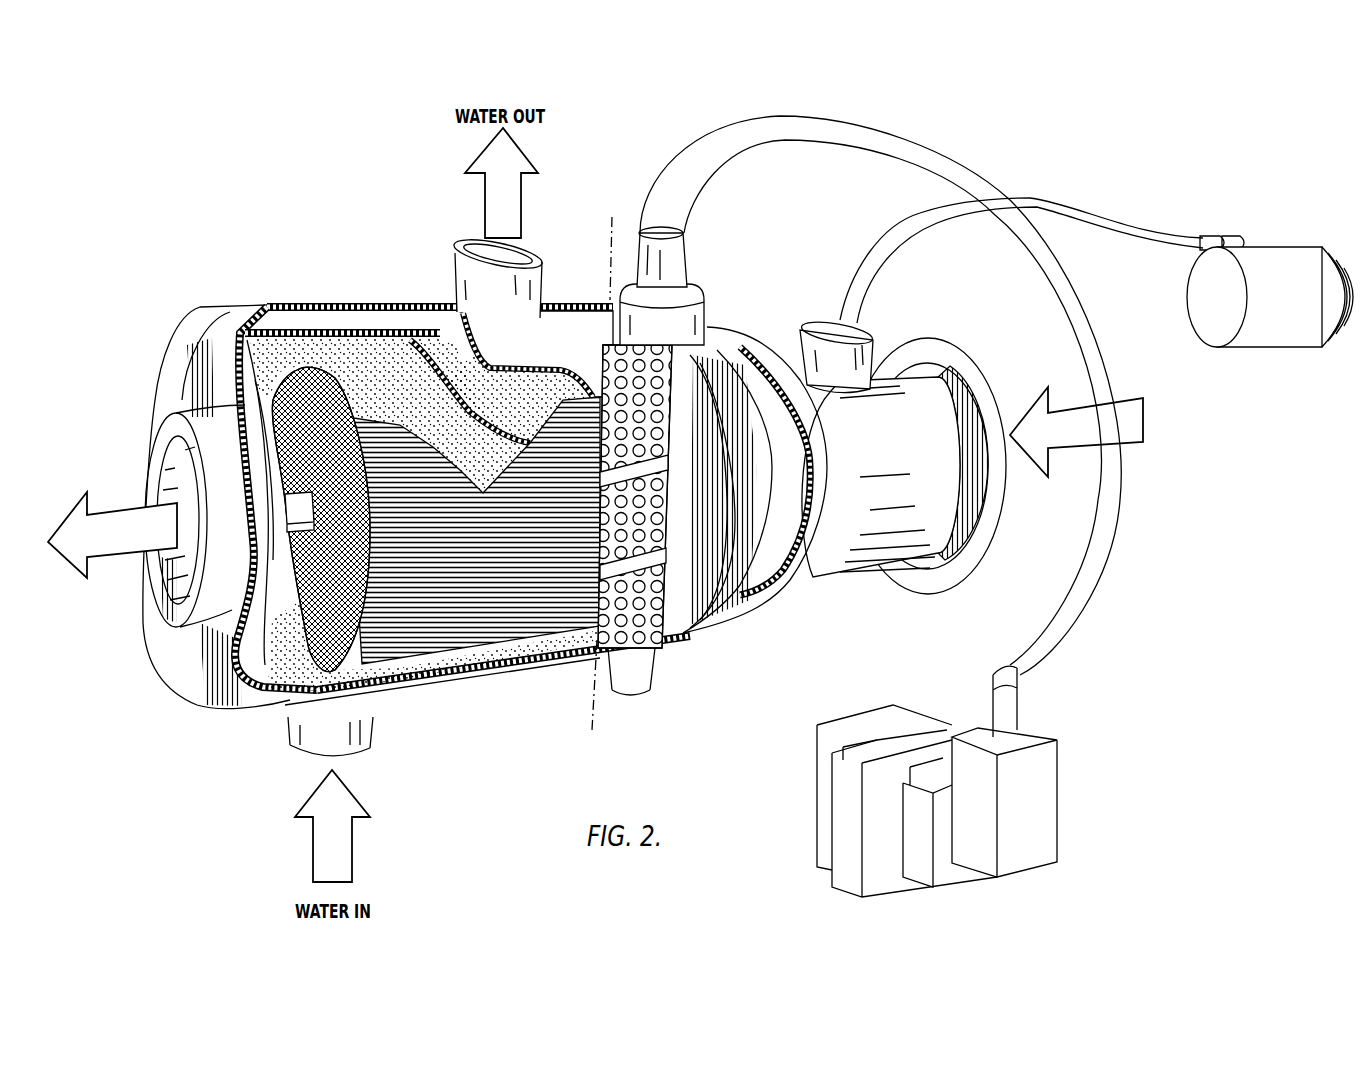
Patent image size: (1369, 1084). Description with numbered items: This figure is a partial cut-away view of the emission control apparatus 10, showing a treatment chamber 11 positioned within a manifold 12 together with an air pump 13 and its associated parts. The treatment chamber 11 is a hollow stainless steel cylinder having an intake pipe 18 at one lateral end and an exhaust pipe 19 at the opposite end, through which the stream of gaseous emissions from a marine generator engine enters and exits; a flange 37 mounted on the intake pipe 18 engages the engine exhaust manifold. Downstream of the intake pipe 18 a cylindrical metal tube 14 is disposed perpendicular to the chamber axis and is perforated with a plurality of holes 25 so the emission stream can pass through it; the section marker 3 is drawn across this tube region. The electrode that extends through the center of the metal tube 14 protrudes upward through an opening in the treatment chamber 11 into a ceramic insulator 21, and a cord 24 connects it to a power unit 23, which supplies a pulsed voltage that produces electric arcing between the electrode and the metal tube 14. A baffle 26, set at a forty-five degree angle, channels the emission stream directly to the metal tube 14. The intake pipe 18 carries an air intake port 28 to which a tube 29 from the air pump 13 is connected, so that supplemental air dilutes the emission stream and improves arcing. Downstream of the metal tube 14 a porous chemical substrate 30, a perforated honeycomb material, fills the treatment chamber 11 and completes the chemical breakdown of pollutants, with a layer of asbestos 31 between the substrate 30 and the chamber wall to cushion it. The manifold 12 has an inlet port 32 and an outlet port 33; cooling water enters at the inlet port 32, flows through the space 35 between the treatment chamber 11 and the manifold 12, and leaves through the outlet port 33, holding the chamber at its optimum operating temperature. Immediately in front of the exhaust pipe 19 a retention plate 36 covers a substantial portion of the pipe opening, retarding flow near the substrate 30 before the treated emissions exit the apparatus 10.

The emission control apparatus 10 is at (282, 226).
The treatment chamber 11 is at (440, 345).
The manifold 12 is at (230, 300).
The air pump 13 is at (1287, 273).
The metal tube 14 is at (640, 640).
The intake pipe 18 is at (877, 540).
The exhaust pipe 19 is at (233, 540).
The ceramic insulator 21 is at (663, 270).
The power unit 23 is at (980, 813).
The cord 24 is at (1092, 543).
The holes 25 is at (637, 640).
The baffle 26 is at (727, 393).
The air intake port 28 is at (880, 363).
The tube 29 is at (867, 263).
The porous chemical substrate 30 is at (445, 605).
The layer of asbestos 31 is at (355, 305).
The inlet port 32 is at (310, 737).
The outlet port 33 is at (470, 300).
The space 35 is at (360, 292).
The retention plate 36 is at (203, 665).
The flange 37 is at (985, 395).
The section line for FIG. 3 is at (640, 217).